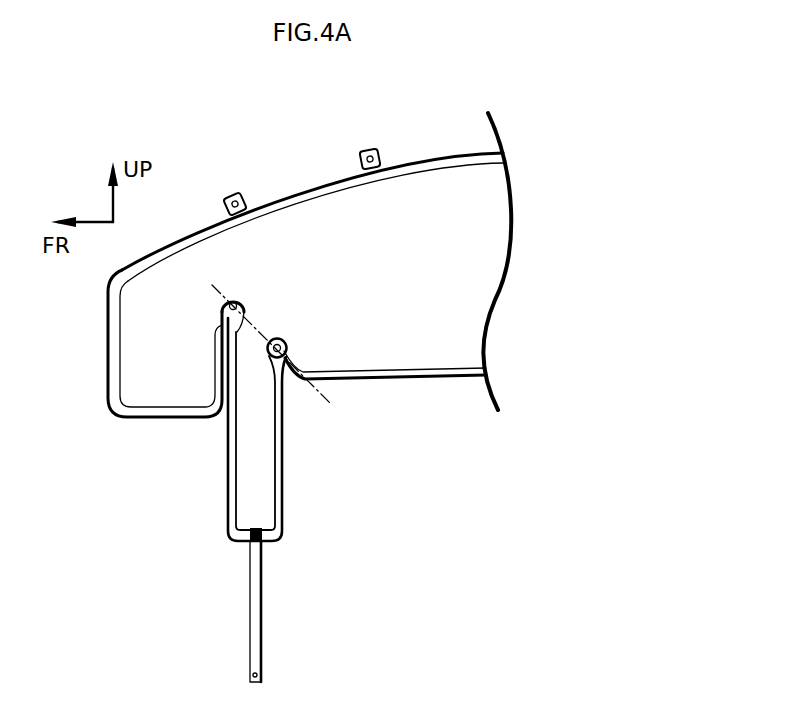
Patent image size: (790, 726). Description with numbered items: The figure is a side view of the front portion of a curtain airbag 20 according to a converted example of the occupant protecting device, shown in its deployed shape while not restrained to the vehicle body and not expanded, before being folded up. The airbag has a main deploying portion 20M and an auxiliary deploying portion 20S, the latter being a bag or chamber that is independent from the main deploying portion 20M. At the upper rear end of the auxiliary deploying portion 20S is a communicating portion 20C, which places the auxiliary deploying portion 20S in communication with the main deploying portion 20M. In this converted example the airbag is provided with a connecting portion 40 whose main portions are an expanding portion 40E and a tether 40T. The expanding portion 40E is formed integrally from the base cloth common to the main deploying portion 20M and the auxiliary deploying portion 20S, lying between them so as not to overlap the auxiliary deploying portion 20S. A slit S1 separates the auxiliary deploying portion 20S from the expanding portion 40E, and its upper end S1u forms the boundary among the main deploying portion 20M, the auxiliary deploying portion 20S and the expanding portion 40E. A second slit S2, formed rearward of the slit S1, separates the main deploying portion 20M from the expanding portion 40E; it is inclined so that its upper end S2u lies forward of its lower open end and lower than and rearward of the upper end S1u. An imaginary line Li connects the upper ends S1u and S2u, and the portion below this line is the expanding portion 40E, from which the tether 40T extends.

The curtain airbag 20 is at (453, 150).
The communicating portion 20C is at (228, 253).
The auxiliary deploying portion 20S is at (150, 397).
The main deploying portion 20M is at (415, 355).
The slit S1 is at (239, 289).
The upper end of slit S1 S1u is at (223, 300).
The slit S2 is at (330, 374).
The upper end of slit S2 S2u is at (288, 346).
The imaginary line Li is at (266, 336).
The connecting portion 40 is at (313, 500).
The expanding portion 40E is at (264, 507).
The tether 40T is at (347, 512).